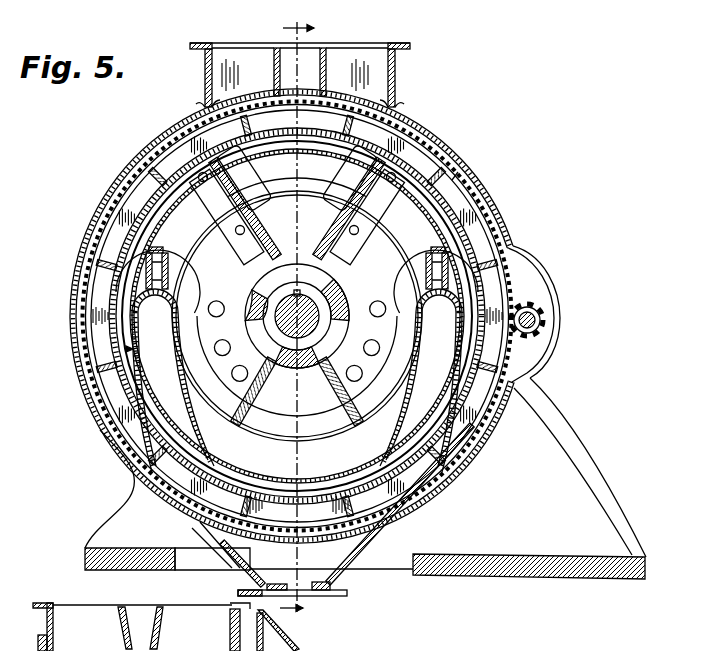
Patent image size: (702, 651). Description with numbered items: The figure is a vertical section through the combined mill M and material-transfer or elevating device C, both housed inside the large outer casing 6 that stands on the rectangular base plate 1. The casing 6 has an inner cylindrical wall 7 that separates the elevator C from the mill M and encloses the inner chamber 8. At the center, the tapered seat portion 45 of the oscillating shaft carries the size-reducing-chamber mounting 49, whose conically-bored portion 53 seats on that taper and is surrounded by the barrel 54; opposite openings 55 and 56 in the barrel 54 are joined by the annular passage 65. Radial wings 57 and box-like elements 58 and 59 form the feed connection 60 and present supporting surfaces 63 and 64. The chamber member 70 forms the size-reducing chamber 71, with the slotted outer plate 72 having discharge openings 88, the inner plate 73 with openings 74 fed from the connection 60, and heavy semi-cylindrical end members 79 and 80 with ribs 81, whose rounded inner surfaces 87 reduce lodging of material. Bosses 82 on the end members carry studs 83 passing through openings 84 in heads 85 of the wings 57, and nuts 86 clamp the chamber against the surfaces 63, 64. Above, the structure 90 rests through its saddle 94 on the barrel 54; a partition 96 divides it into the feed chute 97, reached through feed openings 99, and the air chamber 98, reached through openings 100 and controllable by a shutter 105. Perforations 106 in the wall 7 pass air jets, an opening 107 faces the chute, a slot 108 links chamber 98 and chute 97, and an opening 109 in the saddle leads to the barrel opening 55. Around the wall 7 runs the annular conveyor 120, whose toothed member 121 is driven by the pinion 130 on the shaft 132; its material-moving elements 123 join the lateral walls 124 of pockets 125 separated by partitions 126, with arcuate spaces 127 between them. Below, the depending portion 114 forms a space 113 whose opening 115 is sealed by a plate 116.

The base plate 1 is at (590, 579).
The outer casing 6 is at (18, 640).
The inner cylindrical wall portion 7 is at (470, 190).
The inner chamber 8 is at (476, 180).
The material-transfer or elevating device C is at (448, 150).
The mill M is at (130, 349).
The tapered seat portion 45 is at (405, 350).
The size-reducing-chamber mounting 49 is at (196, 372).
The conically-bored portion 53 is at (405, 368).
The barrel 54 is at (186, 352).
The opening 55 is at (305, 262).
The opening 56 is at (310, 366).
The supporting wings 57 is at (158, 250).
The box-like stiffened element 58 is at (345, 428).
The box-like stiffened element 59 is at (255, 432).
The feed connection 60 is at (280, 432).
The supporting surface 63 is at (236, 424).
The supporting surface 64 is at (368, 416).
The annular passage 65 is at (362, 292).
The size-reducing chamber member 70 is at (540, 366).
The size-reducing chamber 71 is at (465, 408).
The outer perforated plate 72 is at (196, 503).
The inner plate 73 is at (115, 432).
The openings 74 is at (313, 438).
The chamber-end-forming member 79 is at (150, 285).
The chamber-end-forming member 80 is at (392, 290).
The reinforcing ribs 81 is at (125, 306).
The pads or bosses 82 is at (120, 270).
The studs 83 is at (125, 198).
The openings 84 is at (490, 222).
The heads 85 is at (120, 256).
The nuts 86 is at (150, 262).
The inner surfaces 87 is at (152, 296).
The discharge openings 88 is at (132, 455).
The delivery structure 90 is at (175, 188).
The saddle 94 is at (187, 277).
The partition 96 is at (372, 106).
The material feed chute 97 is at (368, 248).
The chamber 98 is at (185, 148).
The feed openings 99 is at (395, 160).
The openings 100 is at (300, 150).
The shutter 105 is at (312, 640).
The perforations 106 is at (208, 110).
The opening 107 is at (350, 165).
The slot 108 is at (277, 247).
The opening 109 is at (192, 258).
The space 113 is at (326, 557).
The depending portion 114 is at (385, 528).
The opening 115 is at (344, 595).
The plate 116 is at (300, 597).
The annular conveyor 120 is at (105, 390).
The annular toothed member 121 is at (537, 340).
The material-moving elements 123 is at (198, 650).
The lateral walls 124 is at (178, 606).
The pockets 125 is at (475, 455).
The partitions 126 is at (455, 480).
The arcuate pockets or spaces 127 is at (64, 630).
The pinion 130 is at (543, 318).
The shaft 132 is at (543, 307).